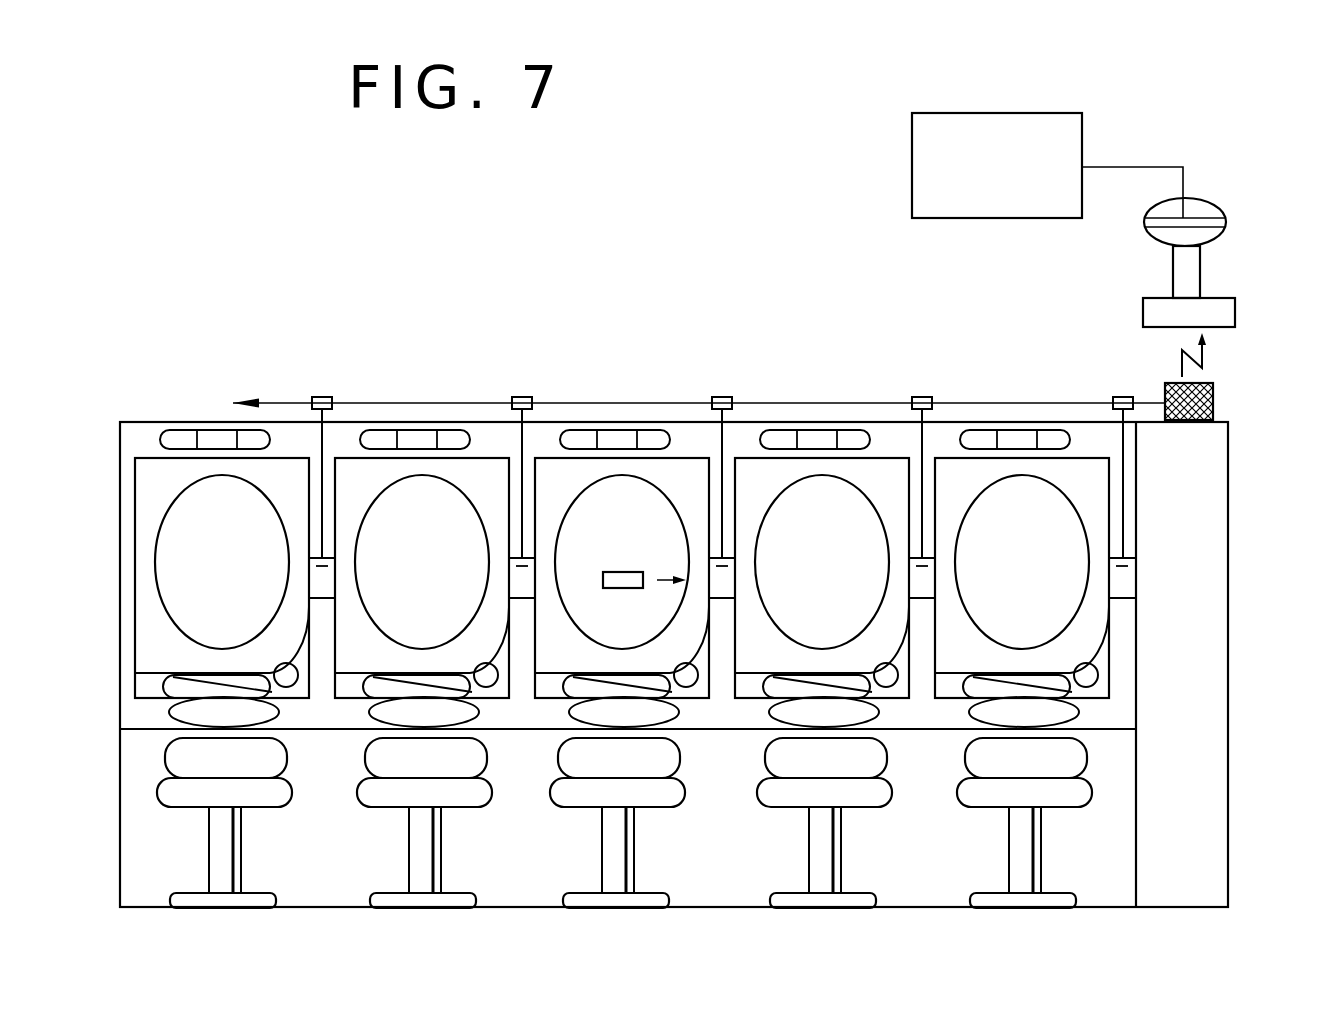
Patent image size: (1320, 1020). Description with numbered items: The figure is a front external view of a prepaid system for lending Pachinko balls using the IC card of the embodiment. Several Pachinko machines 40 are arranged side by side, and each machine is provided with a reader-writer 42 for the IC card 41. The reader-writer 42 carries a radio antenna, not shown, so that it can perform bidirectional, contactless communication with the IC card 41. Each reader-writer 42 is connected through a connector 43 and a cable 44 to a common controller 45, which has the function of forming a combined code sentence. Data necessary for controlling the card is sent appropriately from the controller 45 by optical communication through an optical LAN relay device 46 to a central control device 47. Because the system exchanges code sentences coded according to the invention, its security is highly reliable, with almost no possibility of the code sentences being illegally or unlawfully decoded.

The Pachinko machine 40 is at (472, 655).
The IC card 41 is at (620, 572).
The reader-writer 42 is at (324, 588).
The connector 43 is at (521, 396).
The cable 44 is at (420, 403).
The controller 45 is at (1213, 403).
The optical LAN relay device 46 is at (1200, 270).
The central control device 47 is at (910, 166).